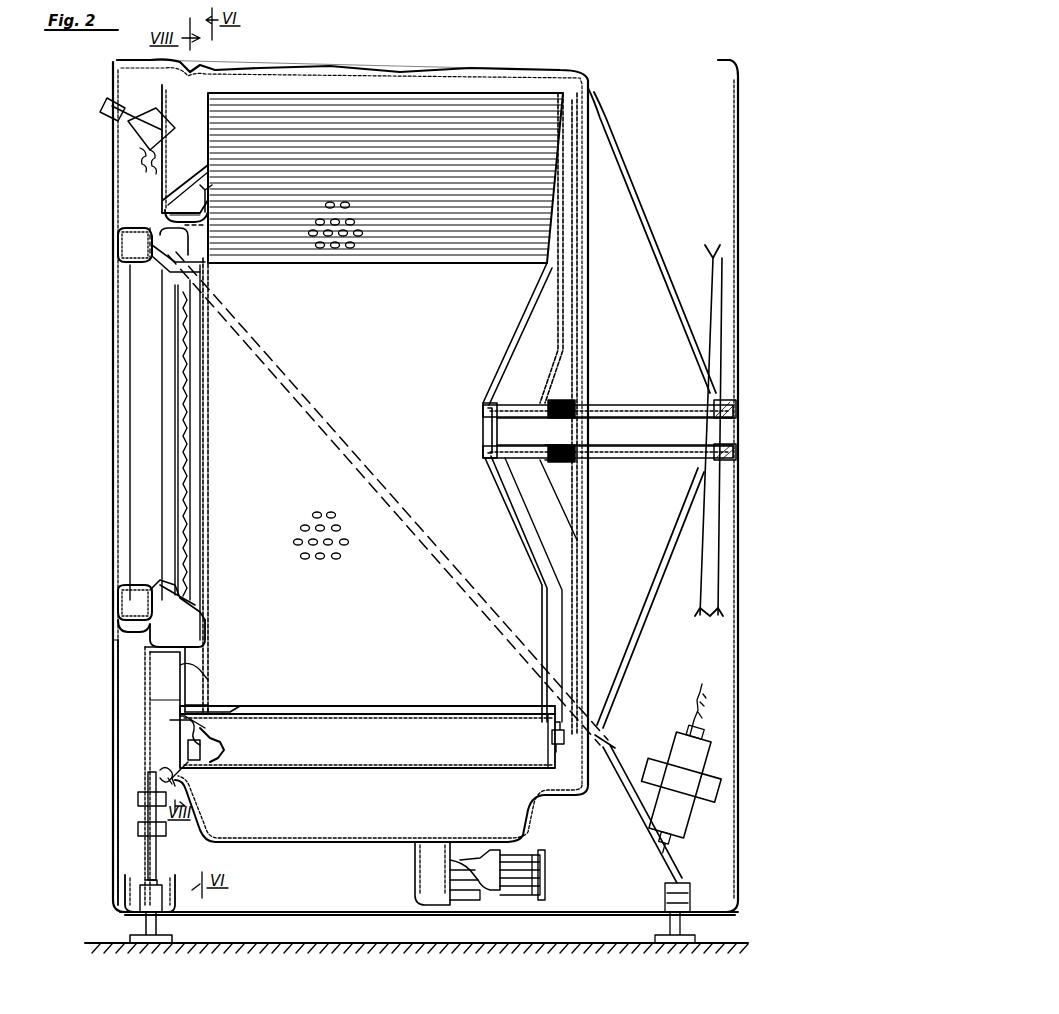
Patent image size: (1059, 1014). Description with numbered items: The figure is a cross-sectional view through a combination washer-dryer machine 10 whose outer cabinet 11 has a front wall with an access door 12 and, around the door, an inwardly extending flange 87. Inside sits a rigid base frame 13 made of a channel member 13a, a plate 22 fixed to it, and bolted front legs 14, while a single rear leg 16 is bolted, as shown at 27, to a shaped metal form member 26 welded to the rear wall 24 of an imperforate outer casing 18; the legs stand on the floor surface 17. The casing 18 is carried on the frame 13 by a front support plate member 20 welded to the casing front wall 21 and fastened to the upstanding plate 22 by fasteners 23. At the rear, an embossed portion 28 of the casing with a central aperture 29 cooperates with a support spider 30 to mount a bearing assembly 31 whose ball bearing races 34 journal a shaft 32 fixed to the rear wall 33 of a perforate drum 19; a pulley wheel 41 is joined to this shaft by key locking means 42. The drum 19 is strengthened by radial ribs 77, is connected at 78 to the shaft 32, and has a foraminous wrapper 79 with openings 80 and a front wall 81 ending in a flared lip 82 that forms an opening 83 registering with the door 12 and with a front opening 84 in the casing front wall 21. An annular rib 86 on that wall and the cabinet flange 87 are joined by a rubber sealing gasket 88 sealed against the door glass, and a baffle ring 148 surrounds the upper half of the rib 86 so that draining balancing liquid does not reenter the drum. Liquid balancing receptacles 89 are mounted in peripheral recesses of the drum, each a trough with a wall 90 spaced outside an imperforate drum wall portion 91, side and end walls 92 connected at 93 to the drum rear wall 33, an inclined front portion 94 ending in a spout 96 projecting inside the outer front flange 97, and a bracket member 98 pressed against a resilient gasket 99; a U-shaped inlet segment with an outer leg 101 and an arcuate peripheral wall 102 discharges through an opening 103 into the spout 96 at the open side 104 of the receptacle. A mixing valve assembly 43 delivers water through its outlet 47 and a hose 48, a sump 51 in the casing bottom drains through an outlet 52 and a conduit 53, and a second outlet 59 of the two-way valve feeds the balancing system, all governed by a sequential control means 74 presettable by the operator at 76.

The machine 10 is at (103, 903).
The outer cabinet 11 is at (113, 808).
The access door 12 is at (113, 540).
The base frame 13 is at (172, 912).
The channel member 13a is at (175, 897).
The front legs 14 is at (150, 935).
The rear leg 16 is at (695, 935).
The floor 17 is at (630, 942).
The outer casing 18 is at (166, 120).
The perforate drum 19 is at (384, 86).
The front support plate member 20 is at (145, 680).
The front wall 21 is at (166, 155).
The plate 22 is at (156, 856).
The fasteners 23 is at (166, 830).
The rear wall 24 is at (588, 618).
The shaped metal form member 26 is at (604, 810).
The fastening 27 is at (660, 898).
The embossed portion 28 is at (578, 372).
The aperture 29 is at (565, 462).
The support spider 30 is at (650, 285).
The bearing assembly 31 is at (650, 460).
The shaft 32 is at (620, 430).
The rear wall 33 is at (548, 242).
The ball bearing races 34 is at (570, 402).
The pulley wheel 41 is at (705, 268).
The key locking means 42 is at (730, 408).
The mixing valve assembly 43 is at (712, 780).
The outlet 47 is at (663, 755).
The hose 48 is at (612, 735).
The sump 51 is at (418, 848).
The outlet 52 is at (508, 852).
The conduit 53 is at (546, 892).
The second outlet 59 is at (190, 232).
The sequential control means 74 is at (130, 136).
The presetting means 76 is at (100, 112).
The strengthening ribs 77 is at (518, 350).
The connection 78 is at (483, 410).
The foraminous wrapper 79 is at (462, 95).
The openings 80 is at (352, 222).
The front wall 81 is at (208, 685).
The lip 82 is at (178, 660).
The opening 83 is at (200, 220).
The front opening 84 is at (180, 598).
The annular rib 86 is at (206, 628).
The flange 87 is at (118, 634).
The rubber sealing gasket 88 is at (178, 555).
The liquid balancing receptacle 89 is at (347, 780).
The wall 90 is at (422, 770).
The imperforate wall portion 91 is at (425, 708).
The side and end walls 92 is at (480, 768).
The connection 93 is at (552, 740).
The inclined portion 94 is at (214, 745).
The spout 96 is at (190, 748).
The outer front flange 97 is at (192, 770).
The bracket member 98 is at (198, 738).
The resilient gasket 99 is at (160, 772).
The outer leg 101 is at (182, 698).
The arcuate peripheral wall 102 is at (216, 718).
The opening 103 is at (198, 712).
The open side 104 is at (182, 735).
The baffle ring 148 is at (180, 205).